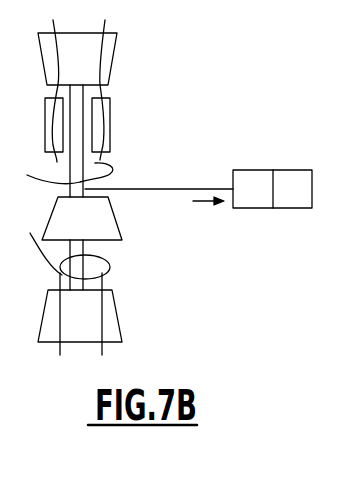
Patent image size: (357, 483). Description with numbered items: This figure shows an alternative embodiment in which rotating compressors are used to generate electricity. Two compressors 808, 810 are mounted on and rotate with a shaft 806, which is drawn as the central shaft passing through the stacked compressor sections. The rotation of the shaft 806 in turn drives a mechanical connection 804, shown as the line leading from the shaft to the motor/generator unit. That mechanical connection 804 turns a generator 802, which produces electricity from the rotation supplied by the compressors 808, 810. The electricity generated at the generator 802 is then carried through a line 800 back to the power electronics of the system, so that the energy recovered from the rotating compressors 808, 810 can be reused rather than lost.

The line 800 is at (28, 33).
The generator 802 is at (303, 168).
The mechanical connection 804 is at (263, 208).
The shaft 806 is at (63, 163).
The compressor 808 is at (102, 220).
The compressor 810 is at (120, 327).